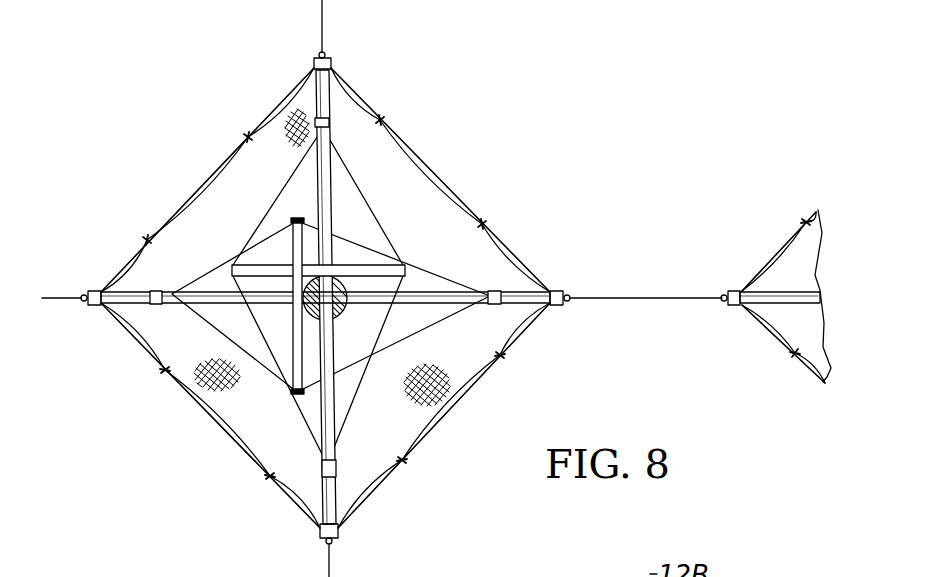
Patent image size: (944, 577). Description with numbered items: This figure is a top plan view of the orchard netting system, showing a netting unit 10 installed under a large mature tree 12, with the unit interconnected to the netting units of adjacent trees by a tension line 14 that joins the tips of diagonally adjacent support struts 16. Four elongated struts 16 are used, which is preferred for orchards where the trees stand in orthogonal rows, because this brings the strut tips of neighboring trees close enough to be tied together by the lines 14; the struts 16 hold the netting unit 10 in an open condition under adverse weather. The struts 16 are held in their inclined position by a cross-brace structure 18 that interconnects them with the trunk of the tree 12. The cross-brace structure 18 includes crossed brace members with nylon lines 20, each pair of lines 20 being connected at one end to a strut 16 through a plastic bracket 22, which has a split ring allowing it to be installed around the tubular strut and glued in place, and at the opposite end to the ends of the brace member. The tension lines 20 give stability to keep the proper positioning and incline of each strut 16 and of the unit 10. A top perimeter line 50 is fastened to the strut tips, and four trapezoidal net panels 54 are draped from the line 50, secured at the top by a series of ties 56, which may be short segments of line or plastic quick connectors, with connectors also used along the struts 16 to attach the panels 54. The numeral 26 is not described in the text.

The netting unit 10 is at (436, 288).
The tree 12 is at (347, 317).
The tension line 14 is at (322, 30).
The support strut 16 is at (332, 163).
The cross-brace structure 18 is at (383, 263).
The nylon lines 20 is at (344, 238).
The plastic bracket 22 is at (500, 291).
The strut 26 is at (273, 265).
The top perimeter line 50 is at (517, 252).
The trapezoidal net panels 54 is at (433, 197).
The ties 56 is at (483, 222).